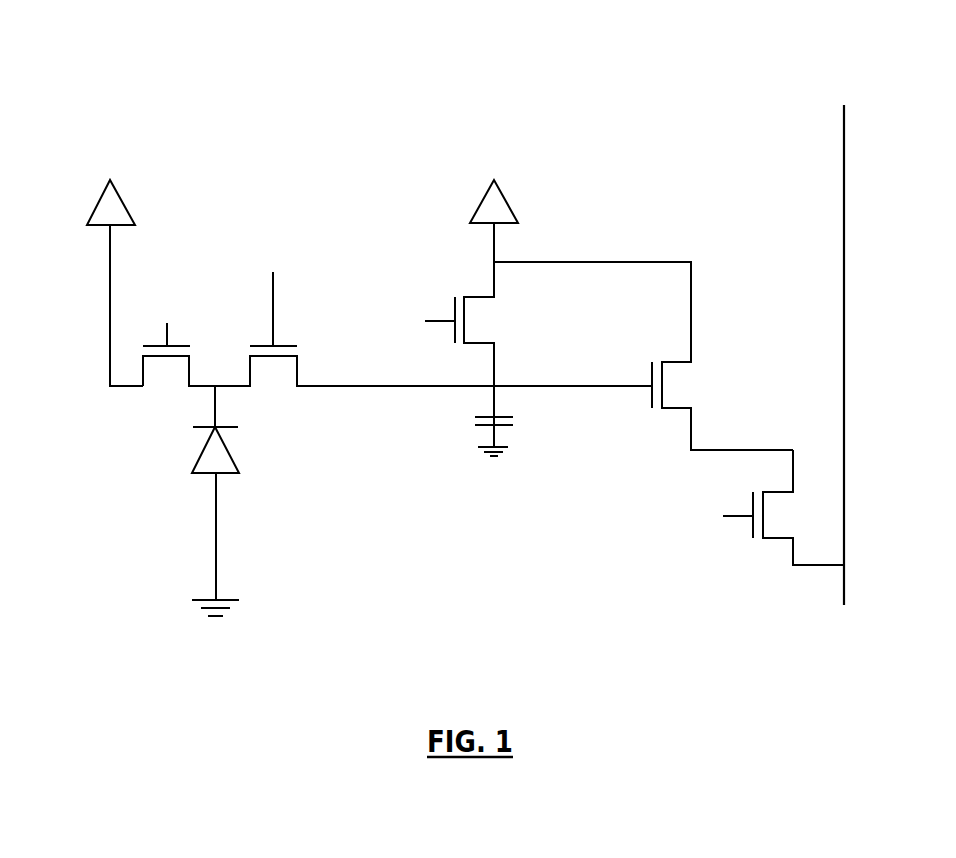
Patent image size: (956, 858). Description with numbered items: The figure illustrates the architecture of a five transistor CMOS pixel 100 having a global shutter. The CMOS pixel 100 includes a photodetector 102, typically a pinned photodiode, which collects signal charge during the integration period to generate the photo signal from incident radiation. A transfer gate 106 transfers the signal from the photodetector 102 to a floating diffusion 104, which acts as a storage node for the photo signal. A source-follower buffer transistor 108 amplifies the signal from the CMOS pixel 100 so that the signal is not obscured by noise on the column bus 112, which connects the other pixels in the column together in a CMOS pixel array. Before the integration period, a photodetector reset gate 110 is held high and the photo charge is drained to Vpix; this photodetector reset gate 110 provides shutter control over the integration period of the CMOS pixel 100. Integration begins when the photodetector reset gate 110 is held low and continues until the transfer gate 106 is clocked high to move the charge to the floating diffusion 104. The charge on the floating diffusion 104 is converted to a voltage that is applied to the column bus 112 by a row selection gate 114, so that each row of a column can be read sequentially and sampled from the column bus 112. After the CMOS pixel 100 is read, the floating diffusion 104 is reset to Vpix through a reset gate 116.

The CMOS pixel 100 is at (456, 93).
The photodetector 102 is at (203, 451).
The floating diffusion 104 is at (477, 421).
The transfer gate 106 is at (283, 343).
The source-follower buffer transistor 108 is at (686, 384).
The photodetector reset gate 110 is at (160, 330).
The column bus 112 is at (844, 181).
The row selection gate 114 is at (752, 530).
The reset gate 116 is at (455, 307).